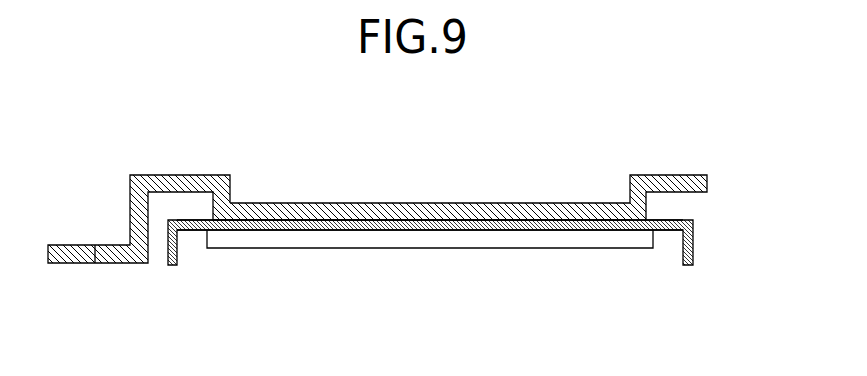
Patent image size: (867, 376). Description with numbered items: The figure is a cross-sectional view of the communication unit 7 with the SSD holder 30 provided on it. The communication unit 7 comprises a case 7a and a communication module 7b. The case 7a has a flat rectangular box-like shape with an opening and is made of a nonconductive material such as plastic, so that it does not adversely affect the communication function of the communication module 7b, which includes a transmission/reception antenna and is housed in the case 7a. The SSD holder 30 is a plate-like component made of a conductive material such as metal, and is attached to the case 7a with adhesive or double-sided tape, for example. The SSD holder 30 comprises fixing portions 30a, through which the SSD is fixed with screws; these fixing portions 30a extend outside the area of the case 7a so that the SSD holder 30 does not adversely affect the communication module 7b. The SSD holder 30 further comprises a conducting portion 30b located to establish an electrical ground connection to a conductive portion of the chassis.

The SSD holder 30 is at (501, 199).
The fixing portions 30a is at (667, 175).
The conducting portion 30b is at (182, 175).
The communication unit 7 is at (694, 282).
The case 7a is at (528, 230).
The communication module 7b is at (335, 237).